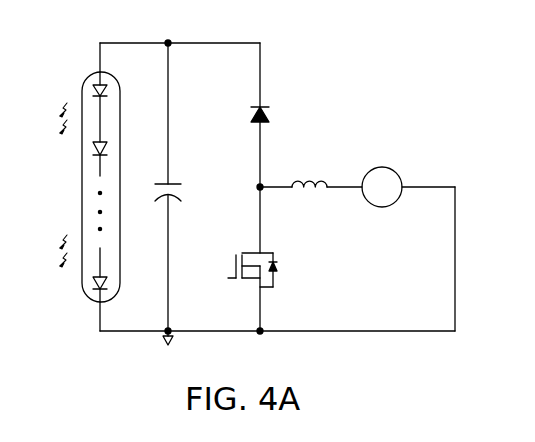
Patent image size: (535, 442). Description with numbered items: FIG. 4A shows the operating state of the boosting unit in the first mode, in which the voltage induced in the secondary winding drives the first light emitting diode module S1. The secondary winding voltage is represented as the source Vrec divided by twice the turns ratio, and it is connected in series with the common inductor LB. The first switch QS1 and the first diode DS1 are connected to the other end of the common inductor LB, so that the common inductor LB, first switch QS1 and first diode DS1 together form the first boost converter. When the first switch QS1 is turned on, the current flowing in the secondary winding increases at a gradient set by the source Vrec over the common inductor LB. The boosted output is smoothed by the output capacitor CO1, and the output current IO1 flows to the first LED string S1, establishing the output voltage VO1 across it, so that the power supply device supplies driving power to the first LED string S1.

The first light emitting diode module S1 is at (86, 76).
The output voltage across LED string VO1 is at (58, 187).
The output current IO1 is at (155, 55).
The output capacitor CO1 is at (183, 187).
The first diode DS1 is at (244, 100).
The first switch QS1 is at (246, 256).
The common inductor LB is at (309, 200).
The rectified voltage Vrec is at (373, 175).